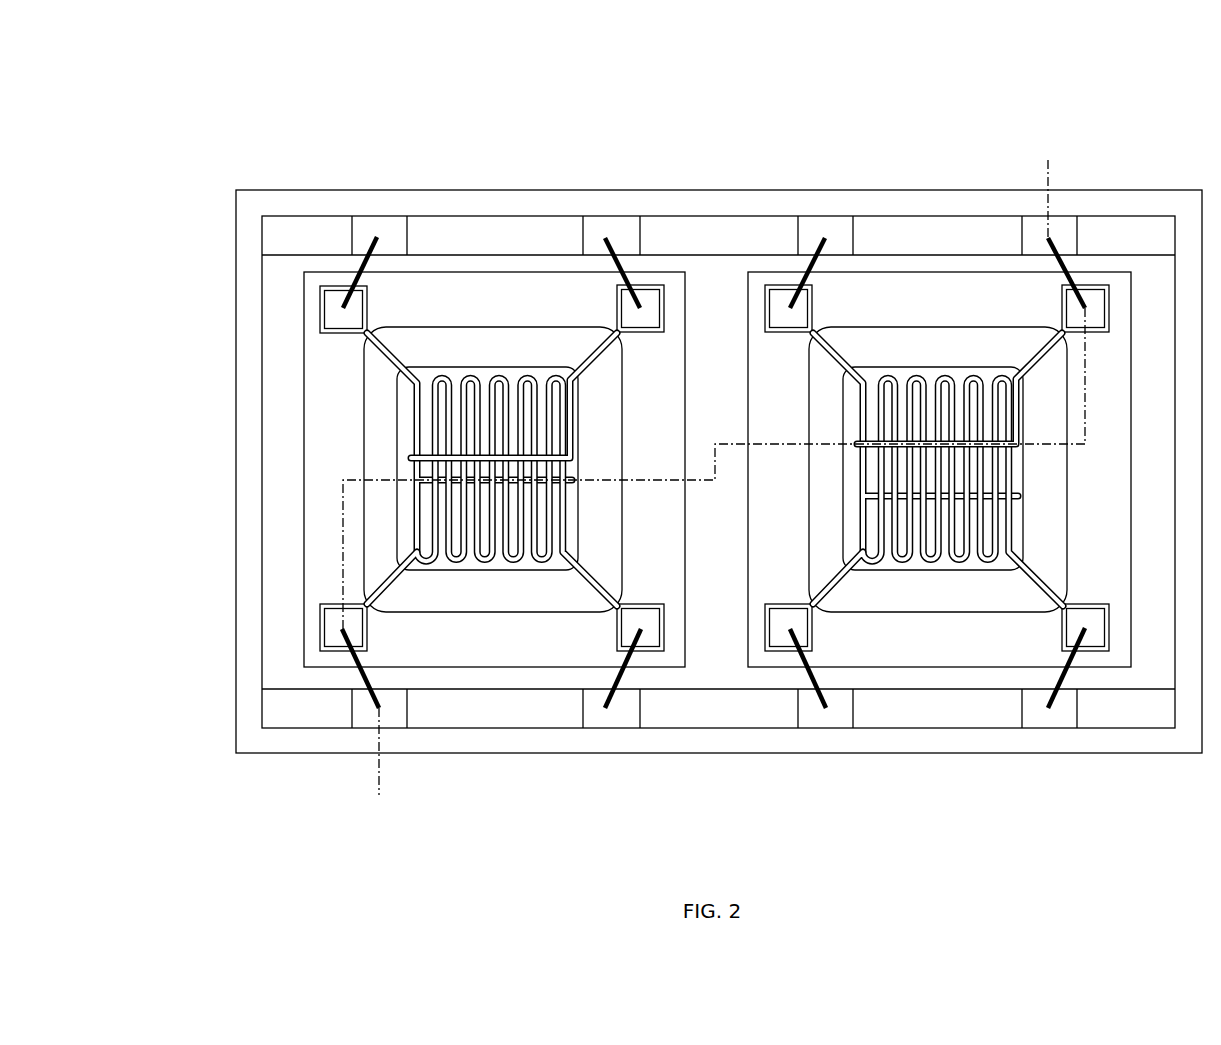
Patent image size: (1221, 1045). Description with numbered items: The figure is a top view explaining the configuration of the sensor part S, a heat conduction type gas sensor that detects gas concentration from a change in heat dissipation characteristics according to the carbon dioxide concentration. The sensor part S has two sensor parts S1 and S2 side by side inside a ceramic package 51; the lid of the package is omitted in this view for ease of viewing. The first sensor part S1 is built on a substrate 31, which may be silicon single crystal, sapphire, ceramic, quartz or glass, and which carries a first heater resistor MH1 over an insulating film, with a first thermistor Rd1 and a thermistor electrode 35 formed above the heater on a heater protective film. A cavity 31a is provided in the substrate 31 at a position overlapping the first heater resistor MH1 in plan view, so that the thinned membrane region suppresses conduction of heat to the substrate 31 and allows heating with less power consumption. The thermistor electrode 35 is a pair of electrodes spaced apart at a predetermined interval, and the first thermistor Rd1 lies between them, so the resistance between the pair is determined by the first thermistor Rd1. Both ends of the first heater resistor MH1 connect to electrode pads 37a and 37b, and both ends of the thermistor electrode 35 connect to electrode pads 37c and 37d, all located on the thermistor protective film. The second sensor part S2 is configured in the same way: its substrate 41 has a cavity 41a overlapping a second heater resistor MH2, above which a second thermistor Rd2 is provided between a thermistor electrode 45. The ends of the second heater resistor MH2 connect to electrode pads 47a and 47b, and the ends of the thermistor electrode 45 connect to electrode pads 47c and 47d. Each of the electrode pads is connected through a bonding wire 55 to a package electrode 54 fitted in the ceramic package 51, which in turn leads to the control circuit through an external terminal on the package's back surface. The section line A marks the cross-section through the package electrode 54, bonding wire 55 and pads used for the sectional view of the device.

The sensor part S is at (1179, 59).
The first sensor part S1 is at (437, 473).
The second sensor part S2 is at (957, 477).
The ceramic package 51 is at (257, 190).
The package electrode 54 is at (396, 228).
The bonding wire 55 is at (358, 263).
The substrate 31 is at (535, 642).
The cavity 31a is at (414, 596).
The thermistor electrode 35 is at (586, 358).
The electrode pad 37a is at (337, 312).
The electrode pad 37b is at (652, 637).
The electrode pad 37c is at (648, 298).
The electrode pad 37d is at (337, 628).
The first heater resistor MH1 is at (567, 470).
The first thermistor Rd1 is at (574, 523).
The substrate 41 is at (985, 658).
The cavity 41a is at (880, 597).
The thermistor electrode 45 is at (1043, 348).
The electrode pad 47a is at (778, 298).
The electrode pad 47b is at (1095, 638).
The electrode pad 47c is at (1091, 298).
The electrode pad 47d is at (776, 636).
The second heater resistor MH2 is at (1012, 468).
The second thermistor Rd2 is at (1014, 522).
The section line A- A is at (714, 476).